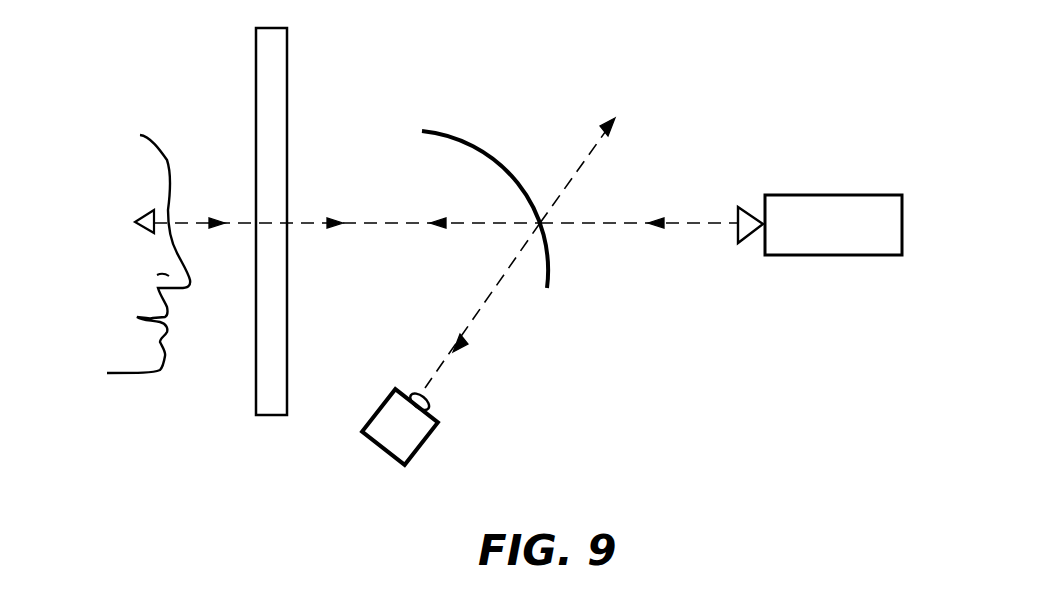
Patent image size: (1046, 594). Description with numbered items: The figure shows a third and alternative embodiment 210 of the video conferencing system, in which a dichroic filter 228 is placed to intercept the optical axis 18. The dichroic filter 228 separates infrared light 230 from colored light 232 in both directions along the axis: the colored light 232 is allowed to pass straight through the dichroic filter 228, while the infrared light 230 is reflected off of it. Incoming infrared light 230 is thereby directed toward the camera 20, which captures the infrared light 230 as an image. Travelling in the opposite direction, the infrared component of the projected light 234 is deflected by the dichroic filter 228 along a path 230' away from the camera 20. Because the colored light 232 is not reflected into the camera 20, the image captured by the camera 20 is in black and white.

The optical axis 18 is at (350, 224).
The camera 20 is at (425, 442).
The third and alternative embodiment of the video conferencing system 210 is at (653, 412).
The dichroic filter 228 is at (462, 132).
The infrared light 230 is at (493, 305).
The continuation of optical path beyond mirror 230' is at (609, 170).
The colored light 232 is at (422, 222).
The projected light 234 is at (610, 225).